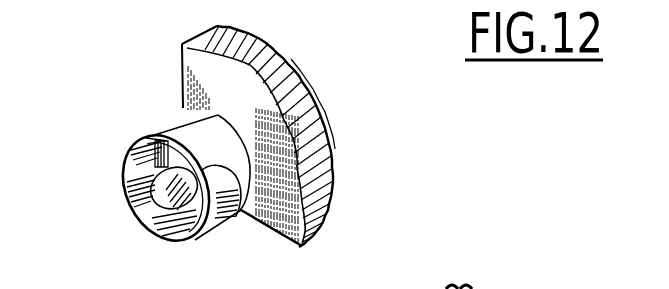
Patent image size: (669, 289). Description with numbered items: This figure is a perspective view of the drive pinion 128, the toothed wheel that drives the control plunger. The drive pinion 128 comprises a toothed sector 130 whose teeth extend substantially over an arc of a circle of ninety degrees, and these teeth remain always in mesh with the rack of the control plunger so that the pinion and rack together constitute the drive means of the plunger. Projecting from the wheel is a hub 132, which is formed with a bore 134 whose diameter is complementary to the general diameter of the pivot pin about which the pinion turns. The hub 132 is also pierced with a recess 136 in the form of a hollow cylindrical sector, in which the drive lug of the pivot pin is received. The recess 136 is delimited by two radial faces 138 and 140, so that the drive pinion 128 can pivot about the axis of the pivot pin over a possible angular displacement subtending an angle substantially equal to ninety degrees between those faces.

The drive pinion 128 is at (321, 79).
The toothed sector 130 is at (330, 148).
The hub 132 is at (128, 158).
The bore 134 is at (127, 200).
The recess 136 is at (210, 237).
The radial face 138 is at (148, 222).
The radial face 140 is at (120, 175).